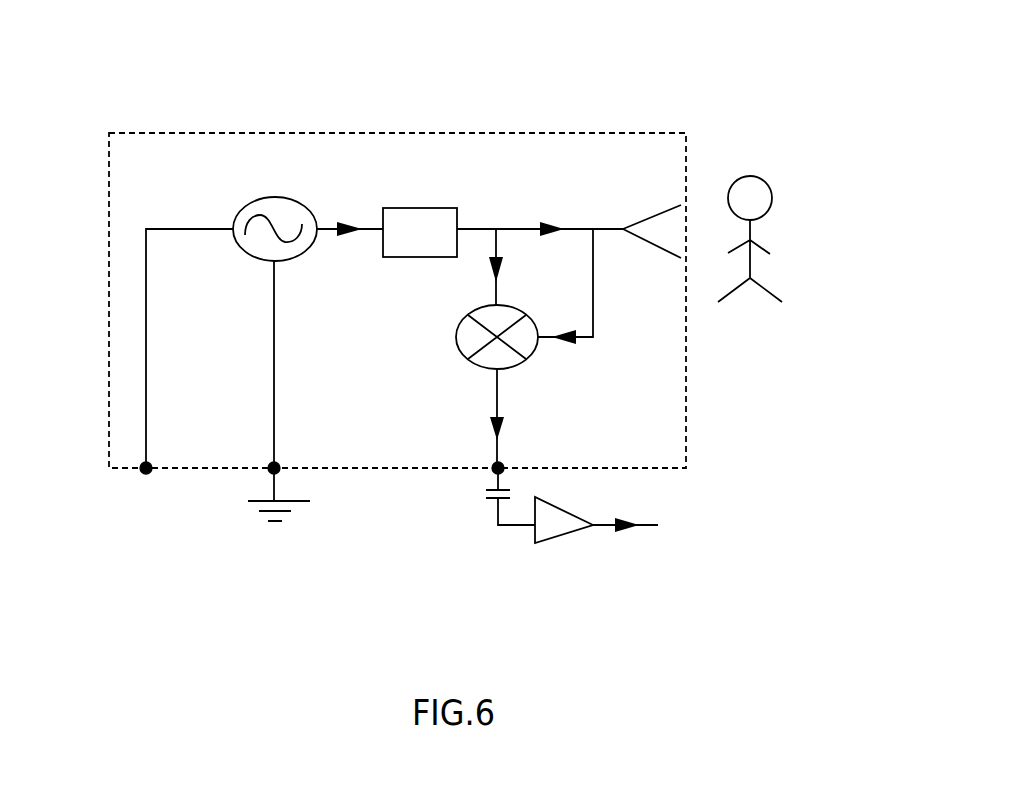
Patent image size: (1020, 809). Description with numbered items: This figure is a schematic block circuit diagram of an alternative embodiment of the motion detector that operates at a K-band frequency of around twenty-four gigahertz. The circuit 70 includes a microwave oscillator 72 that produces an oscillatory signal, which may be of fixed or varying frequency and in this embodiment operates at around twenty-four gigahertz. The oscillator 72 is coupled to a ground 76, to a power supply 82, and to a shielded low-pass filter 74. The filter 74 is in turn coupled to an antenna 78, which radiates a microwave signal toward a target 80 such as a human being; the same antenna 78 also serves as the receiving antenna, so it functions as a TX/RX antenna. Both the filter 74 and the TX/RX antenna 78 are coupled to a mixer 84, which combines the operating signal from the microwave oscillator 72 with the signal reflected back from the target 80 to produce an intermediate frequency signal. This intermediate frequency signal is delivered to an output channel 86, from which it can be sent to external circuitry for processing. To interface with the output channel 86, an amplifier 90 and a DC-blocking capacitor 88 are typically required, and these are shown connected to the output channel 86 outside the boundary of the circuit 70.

The circuit 70 is at (426, 133).
The microwave oscillator 72 is at (302, 212).
The shielded low-pass filter 74 is at (430, 208).
The ground 76 is at (250, 491).
The antenna 78 is at (668, 215).
The target 80 is at (762, 203).
The power supply 82 is at (146, 468).
The mixer 84 is at (527, 343).
The output channel 86 is at (490, 475).
The DC-blocking capacitor 88 is at (497, 503).
The amplifier 90 is at (565, 510).